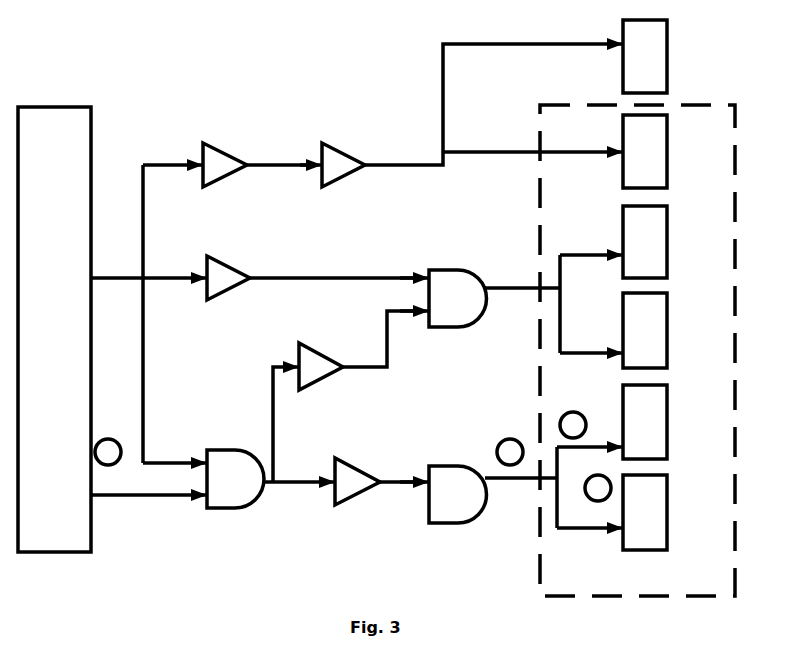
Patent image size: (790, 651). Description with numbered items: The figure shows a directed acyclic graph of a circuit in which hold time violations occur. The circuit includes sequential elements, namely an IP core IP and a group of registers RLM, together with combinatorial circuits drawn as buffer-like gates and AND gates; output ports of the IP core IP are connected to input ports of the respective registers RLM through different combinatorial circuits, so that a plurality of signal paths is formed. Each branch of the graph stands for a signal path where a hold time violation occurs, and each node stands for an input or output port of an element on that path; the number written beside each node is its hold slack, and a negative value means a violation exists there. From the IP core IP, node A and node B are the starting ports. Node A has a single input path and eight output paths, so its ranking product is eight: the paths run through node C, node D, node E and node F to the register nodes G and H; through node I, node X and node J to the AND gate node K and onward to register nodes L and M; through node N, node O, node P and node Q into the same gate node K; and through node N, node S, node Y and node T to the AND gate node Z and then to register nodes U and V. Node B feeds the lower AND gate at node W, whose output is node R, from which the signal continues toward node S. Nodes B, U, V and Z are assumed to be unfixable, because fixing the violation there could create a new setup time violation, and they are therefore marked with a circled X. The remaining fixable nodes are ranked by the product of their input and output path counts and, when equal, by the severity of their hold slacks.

The IP core IP is at (54, 329).
The register module RLM is at (637, 350).
The node A is at (117, 314).
The node B is at (149, 481).
The node C is at (195, 165).
The node D is at (270, 165).
The node E is at (320, 165).
The node F is at (494, 119).
The node G is at (641, 54).
The node H is at (580, 151).
The node I is at (196, 276).
The node J is at (391, 262).
The node K is at (494, 294).
The node L is at (639, 279).
The node M is at (639, 337).
The node N is at (175, 439).
The node O is at (284, 363).
The node P is at (378, 351).
The node Q is at (415, 337).
The node R is at (299, 437).
The node S is at (348, 479).
The node T is at (409, 467).
The node U is at (637, 456).
The node V is at (637, 515).
The node W is at (223, 490).
The node X is at (339, 277).
The node Y is at (395, 479).
The node Z is at (493, 481).